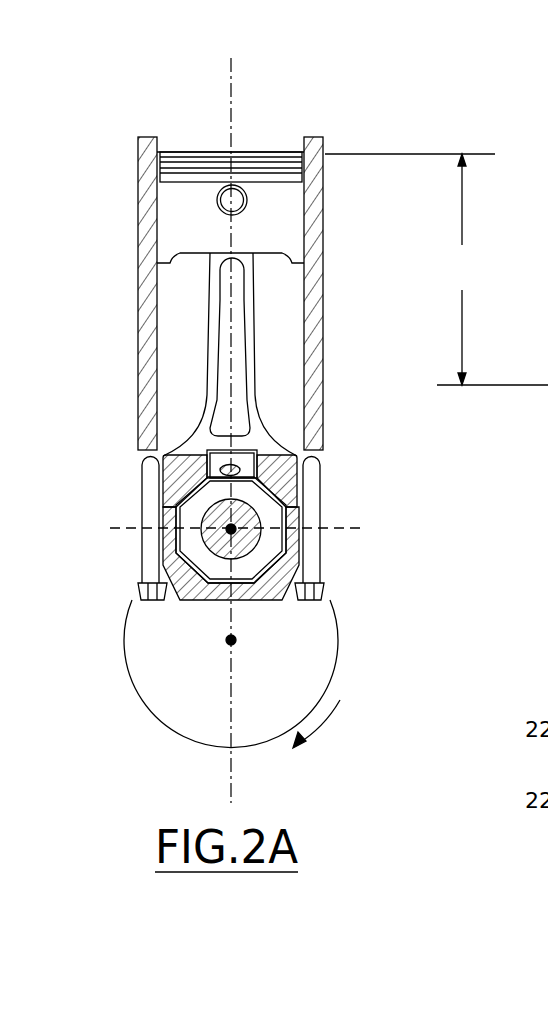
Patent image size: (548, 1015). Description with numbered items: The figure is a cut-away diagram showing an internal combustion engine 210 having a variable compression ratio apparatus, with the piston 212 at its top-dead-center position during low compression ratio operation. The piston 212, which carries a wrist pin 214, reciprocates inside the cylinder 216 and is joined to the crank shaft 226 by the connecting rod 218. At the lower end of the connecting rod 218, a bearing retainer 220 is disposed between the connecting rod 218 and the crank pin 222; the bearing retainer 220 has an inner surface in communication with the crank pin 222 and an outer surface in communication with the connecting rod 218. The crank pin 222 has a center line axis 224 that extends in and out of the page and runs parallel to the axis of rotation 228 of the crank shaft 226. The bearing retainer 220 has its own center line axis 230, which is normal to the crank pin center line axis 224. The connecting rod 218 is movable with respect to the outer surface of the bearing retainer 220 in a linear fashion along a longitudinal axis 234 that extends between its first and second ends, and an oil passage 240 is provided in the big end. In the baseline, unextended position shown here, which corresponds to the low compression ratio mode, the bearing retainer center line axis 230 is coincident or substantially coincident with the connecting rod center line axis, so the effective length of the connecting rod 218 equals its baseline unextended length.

The crank mechanism / piston-crank assembly 210 is at (133, 60).
The piston 212 is at (162, 222).
The wrist pin 214 is at (247, 198).
The cylinder 216 is at (138, 275).
The connecting rod 218 is at (238, 338).
The bearing retainer 220 is at (297, 482).
The crank pin 222 is at (215, 515).
The center line axis of the crank pin 224 is at (240, 533).
The crank shaft 226 is at (335, 670).
The axis of rotation 228 is at (236, 640).
The center line axis of the bearing retainer 230 is at (347, 523).
The longitudinal axis 234 is at (234, 95).
The oil passage 240 is at (222, 466).